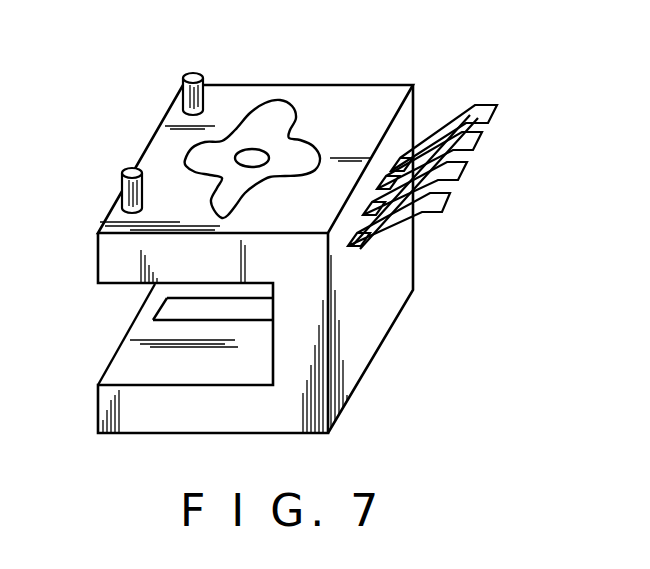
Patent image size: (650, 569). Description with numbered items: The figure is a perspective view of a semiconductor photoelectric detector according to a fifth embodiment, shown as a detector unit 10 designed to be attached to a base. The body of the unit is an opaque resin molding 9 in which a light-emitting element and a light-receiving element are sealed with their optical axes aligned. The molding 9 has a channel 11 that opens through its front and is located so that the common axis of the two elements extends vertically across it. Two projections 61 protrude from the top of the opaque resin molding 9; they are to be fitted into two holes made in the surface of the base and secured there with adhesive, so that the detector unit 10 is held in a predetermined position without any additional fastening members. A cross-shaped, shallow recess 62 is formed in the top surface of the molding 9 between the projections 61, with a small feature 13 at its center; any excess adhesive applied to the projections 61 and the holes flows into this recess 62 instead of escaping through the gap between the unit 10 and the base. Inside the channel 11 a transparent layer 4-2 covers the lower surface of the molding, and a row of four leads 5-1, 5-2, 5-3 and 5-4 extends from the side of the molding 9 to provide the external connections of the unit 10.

The opaque resin molding 9 is at (339, 97).
The detector unit 10 is at (86, 401).
The channel 11 is at (110, 315).
The opening 13 is at (252, 160).
The projections 61 is at (185, 79).
The cross-shaped shallow recess 62 is at (229, 140).
The transparent layer 4-2 is at (214, 311).
The lead 5-1 is at (490, 120).
The lead 5-2 is at (476, 148).
The lead 5-3 is at (459, 178).
The lead 5-4 is at (441, 212).